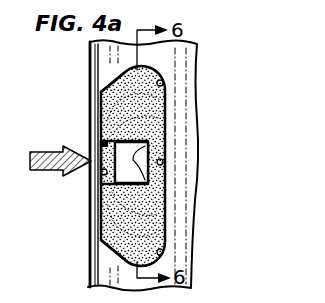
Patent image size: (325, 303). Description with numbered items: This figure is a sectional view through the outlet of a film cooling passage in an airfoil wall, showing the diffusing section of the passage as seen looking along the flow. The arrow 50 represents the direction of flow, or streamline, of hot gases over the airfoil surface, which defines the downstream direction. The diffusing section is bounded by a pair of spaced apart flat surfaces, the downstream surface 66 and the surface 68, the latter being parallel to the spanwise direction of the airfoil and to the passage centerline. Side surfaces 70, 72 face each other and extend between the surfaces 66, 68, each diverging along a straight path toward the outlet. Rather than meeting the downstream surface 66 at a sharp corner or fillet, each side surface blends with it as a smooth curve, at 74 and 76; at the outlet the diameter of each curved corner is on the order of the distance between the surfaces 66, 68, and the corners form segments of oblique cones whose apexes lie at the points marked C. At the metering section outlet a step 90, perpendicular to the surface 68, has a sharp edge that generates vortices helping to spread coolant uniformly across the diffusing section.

The arrows 50 is at (60, 149).
The downstream flat surface 66 is at (163, 162).
The flat surface 68 is at (101, 176).
The side surface 70 is at (126, 92).
The side surface 72 is at (128, 232).
The curved corner 74 is at (163, 86).
The curved corner 76 is at (163, 250).
The step 90 is at (98, 151).